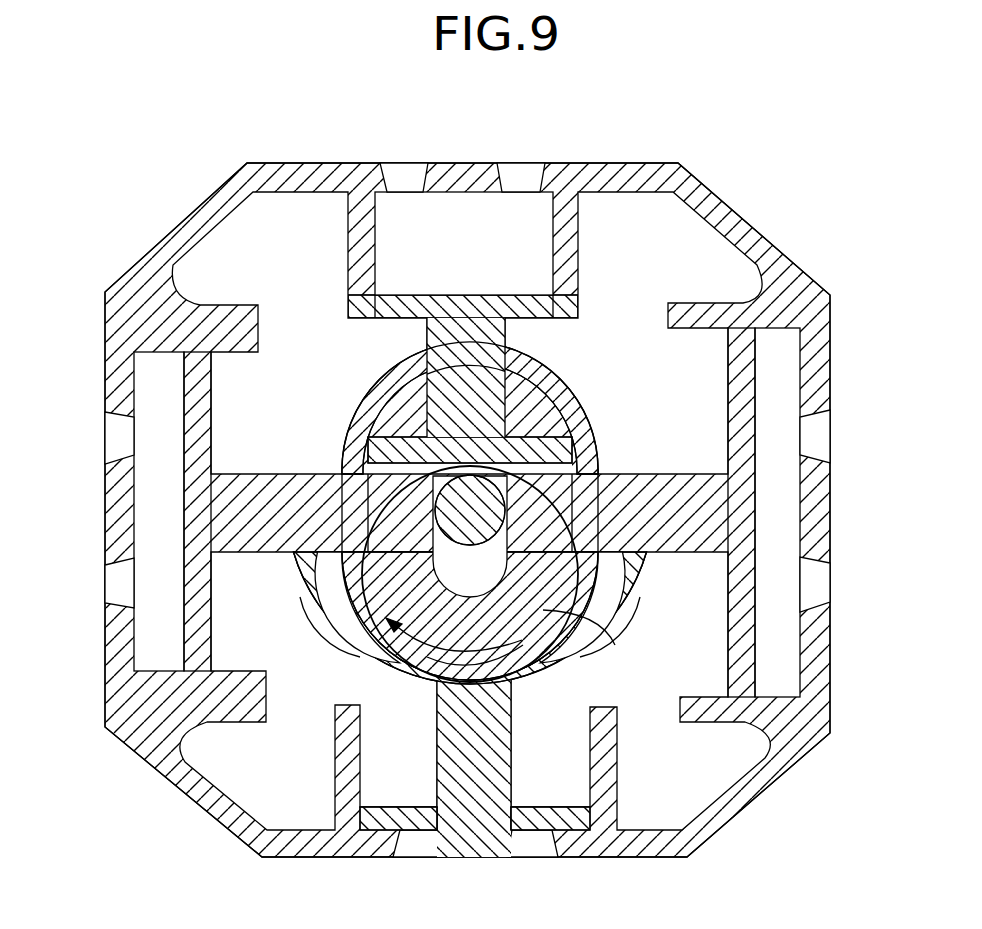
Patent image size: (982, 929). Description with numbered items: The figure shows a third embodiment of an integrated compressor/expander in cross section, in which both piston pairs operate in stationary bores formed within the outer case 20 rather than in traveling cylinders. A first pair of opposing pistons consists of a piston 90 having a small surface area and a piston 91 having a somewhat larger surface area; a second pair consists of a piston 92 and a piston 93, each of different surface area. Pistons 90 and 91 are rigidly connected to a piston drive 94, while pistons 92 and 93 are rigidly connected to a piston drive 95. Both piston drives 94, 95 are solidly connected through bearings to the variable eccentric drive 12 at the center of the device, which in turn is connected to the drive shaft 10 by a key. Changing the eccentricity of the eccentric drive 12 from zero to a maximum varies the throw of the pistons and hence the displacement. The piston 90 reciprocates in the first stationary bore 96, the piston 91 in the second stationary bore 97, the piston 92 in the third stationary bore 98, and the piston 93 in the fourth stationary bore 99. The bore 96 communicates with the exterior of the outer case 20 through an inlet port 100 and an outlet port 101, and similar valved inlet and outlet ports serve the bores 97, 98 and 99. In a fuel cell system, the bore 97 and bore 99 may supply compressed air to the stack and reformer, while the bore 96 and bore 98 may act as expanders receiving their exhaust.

The drive shaft 10 is at (493, 513).
The variable eccentric drive 12 is at (615, 645).
The outer case 20 is at (707, 211).
The piston 90 is at (530, 322).
The piston 91 is at (571, 820).
The piston 92 is at (213, 403).
The piston 93 is at (728, 350).
The piston drive 94 is at (637, 590).
The piston drive 95 is at (580, 434).
The first stationary bore 96 is at (535, 247).
The second stationary bore 97 is at (478, 835).
The third stationary bore 98 is at (152, 390).
The fourth stationary bore 99 is at (783, 394).
The inlet port 100 is at (405, 178).
The outlet port 101 is at (515, 180).